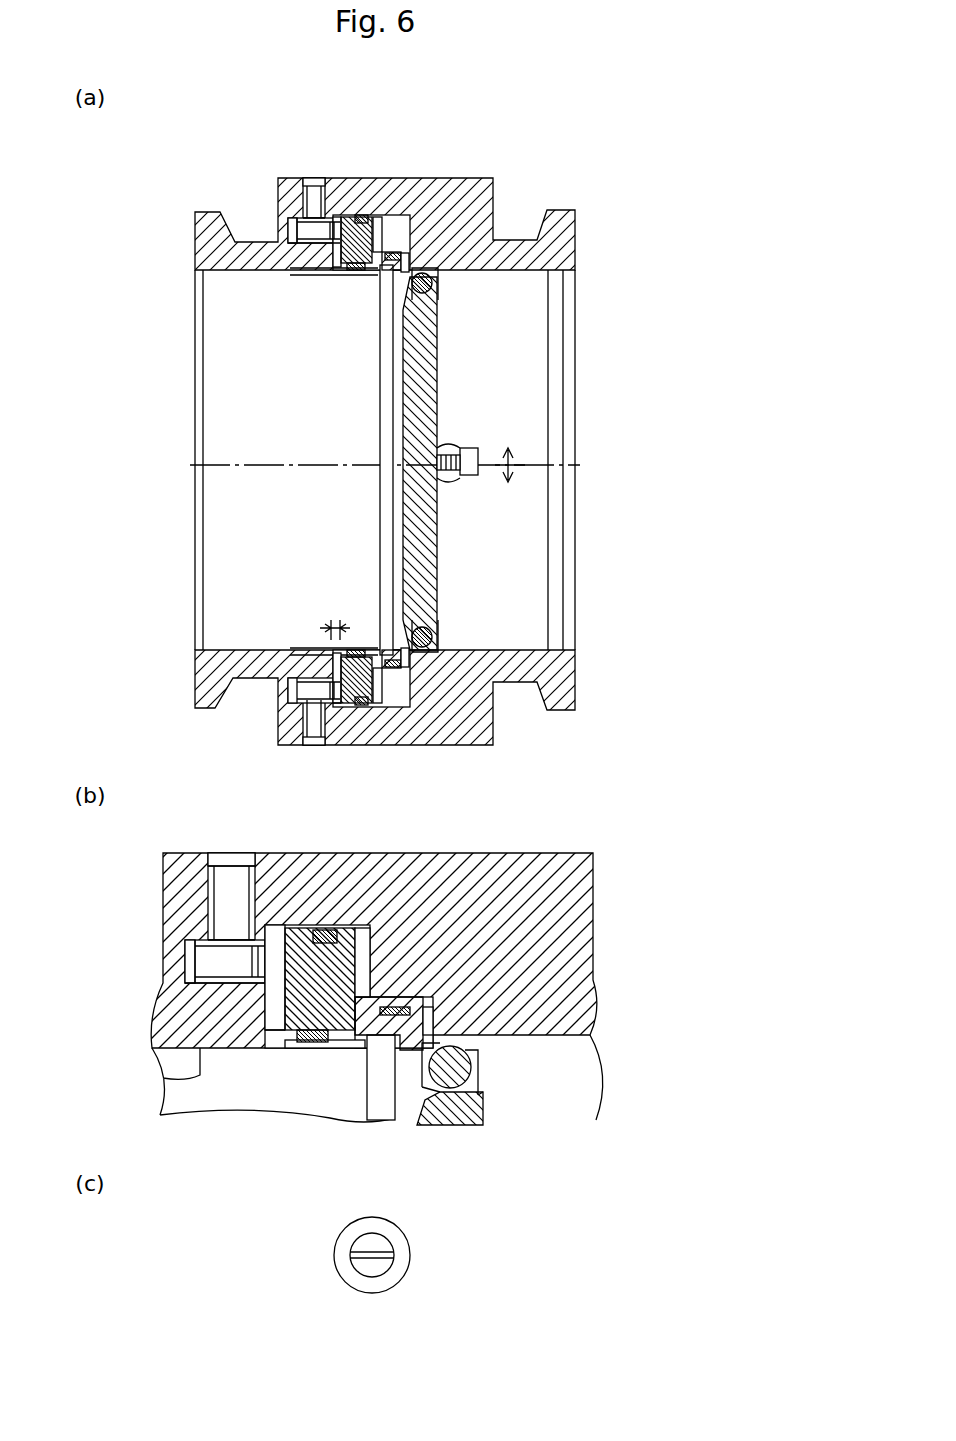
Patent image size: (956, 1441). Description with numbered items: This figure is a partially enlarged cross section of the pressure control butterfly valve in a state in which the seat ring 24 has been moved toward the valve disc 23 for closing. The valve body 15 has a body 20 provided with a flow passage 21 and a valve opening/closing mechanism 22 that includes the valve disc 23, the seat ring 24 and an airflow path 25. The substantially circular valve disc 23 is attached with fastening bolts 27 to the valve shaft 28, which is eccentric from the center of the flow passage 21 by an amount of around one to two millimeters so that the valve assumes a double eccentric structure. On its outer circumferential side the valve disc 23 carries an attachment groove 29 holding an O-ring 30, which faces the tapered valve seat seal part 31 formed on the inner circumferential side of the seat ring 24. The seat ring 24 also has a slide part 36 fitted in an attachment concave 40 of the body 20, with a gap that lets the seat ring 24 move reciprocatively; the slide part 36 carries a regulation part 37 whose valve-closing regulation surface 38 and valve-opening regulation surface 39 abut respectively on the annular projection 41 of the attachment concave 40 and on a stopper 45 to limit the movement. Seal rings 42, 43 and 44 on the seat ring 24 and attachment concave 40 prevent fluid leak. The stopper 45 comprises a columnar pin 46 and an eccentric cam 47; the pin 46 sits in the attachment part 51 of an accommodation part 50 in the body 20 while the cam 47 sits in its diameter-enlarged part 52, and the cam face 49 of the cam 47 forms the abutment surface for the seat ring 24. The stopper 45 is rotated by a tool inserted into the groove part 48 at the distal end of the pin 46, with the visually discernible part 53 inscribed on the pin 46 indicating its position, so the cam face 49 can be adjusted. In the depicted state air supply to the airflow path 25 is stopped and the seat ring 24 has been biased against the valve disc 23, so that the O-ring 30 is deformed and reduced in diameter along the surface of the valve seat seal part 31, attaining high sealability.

The valve body 15 is at (582, 672).
The body 20 is at (208, 230).
The flow passage 21 is at (205, 632).
The valve opening/closing mechanism 22 is at (470, 632).
The valve disc 23 is at (440, 560).
The seat ring 24 is at (331, 705).
The airflow path 25 is at (392, 238).
The fastening bolts 27 is at (470, 450).
The valve shaft 28 is at (458, 478).
The attachment groove 29 is at (430, 295).
The O-ring 30 is at (432, 285).
The valve seat seal part 31 is at (430, 632).
The slide part 36 is at (352, 240).
The regulation part 37 is at (365, 705).
The valve-closing regulation surface 38 is at (458, 232).
The valve-opening regulation surface 39 is at (300, 230).
The attachment concave 40 is at (352, 650).
The annular projection 41 is at (386, 610).
The seal ring 42 is at (362, 220).
The seal ring 43 is at (395, 665).
The seal ring 44 is at (352, 270).
The stopper 45 is at (297, 230).
The columnar pin 46 is at (314, 732).
The cam 47 is at (296, 692).
The groove part 48 is at (390, 1252).
The cam face 49 is at (300, 283).
The accommodation part 50 is at (315, 200).
The attachment part 51 is at (312, 215).
The diameter-enlarged part 52 is at (310, 262).
The visually discernible part 53 is at (358, 1250).